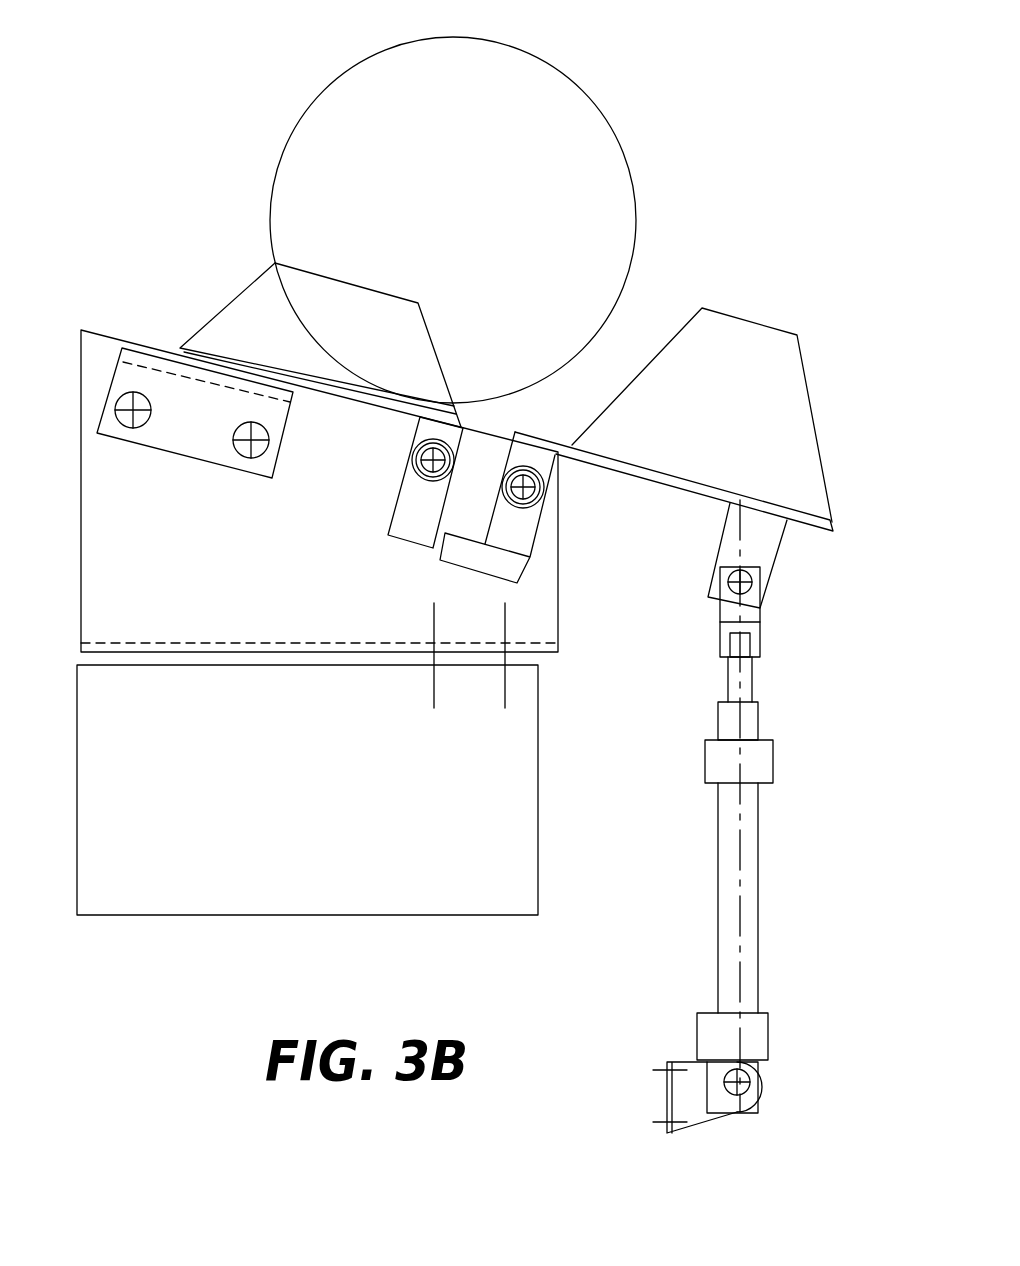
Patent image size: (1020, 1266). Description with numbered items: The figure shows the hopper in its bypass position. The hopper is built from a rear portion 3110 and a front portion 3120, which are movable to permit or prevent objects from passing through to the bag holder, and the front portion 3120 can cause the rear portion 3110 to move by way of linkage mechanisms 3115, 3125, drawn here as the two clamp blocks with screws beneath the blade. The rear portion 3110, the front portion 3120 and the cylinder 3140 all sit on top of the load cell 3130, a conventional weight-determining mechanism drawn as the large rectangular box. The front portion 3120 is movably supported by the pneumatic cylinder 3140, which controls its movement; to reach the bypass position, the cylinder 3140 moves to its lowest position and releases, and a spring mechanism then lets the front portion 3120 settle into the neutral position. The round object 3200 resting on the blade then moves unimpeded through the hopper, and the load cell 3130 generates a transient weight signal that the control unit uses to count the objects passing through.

The object 3200 is at (555, 78).
The rear portion 3110 is at (247, 293).
The linkage mechanism 3115 is at (397, 507).
The linkage mechanism 3125 is at (550, 497).
The front portion 3120 is at (762, 336).
The load cell 3130 is at (155, 915).
The cylinder 3140 is at (758, 884).